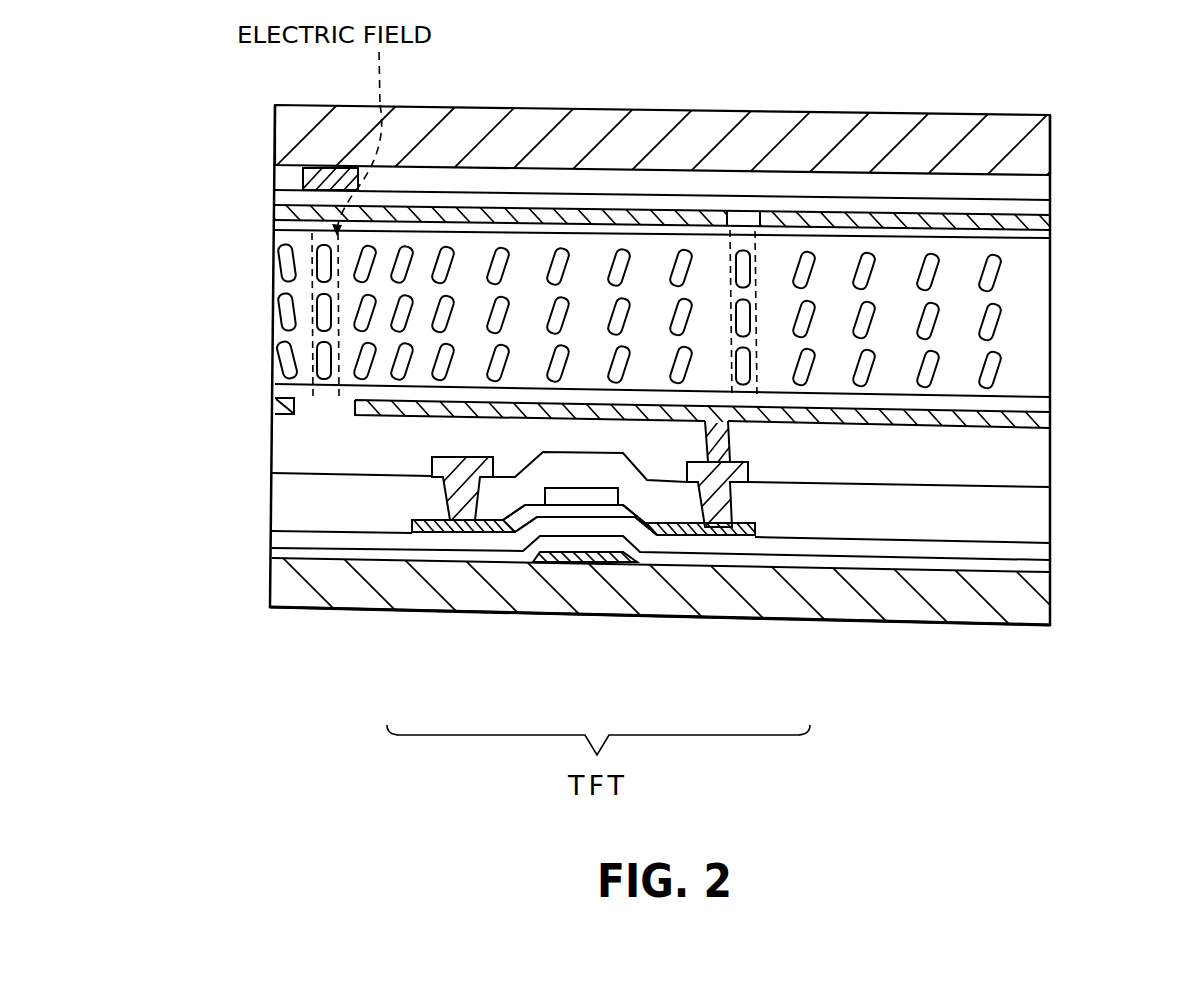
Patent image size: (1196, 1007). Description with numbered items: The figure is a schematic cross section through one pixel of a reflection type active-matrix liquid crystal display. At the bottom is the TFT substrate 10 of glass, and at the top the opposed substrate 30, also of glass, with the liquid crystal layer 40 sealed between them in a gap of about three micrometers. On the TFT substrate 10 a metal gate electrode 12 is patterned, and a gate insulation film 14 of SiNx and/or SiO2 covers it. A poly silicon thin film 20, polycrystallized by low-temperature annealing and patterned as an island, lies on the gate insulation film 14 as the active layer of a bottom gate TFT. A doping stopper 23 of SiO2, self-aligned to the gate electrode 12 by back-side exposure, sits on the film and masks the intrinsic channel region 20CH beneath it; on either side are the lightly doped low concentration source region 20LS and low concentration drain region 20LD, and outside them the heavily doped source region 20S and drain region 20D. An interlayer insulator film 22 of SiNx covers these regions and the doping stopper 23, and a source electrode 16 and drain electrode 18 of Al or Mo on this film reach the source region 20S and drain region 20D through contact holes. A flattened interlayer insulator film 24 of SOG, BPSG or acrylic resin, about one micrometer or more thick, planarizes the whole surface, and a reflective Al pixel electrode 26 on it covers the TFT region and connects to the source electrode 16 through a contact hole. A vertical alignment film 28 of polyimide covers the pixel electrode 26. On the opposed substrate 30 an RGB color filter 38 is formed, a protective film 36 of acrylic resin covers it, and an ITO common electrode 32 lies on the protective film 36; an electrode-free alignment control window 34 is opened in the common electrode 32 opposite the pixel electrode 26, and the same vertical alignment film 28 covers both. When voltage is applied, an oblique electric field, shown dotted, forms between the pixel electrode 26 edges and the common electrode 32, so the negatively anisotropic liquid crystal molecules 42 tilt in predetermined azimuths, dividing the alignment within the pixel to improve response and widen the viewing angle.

The TFT substrate 10 is at (300, 602).
The gate electrode 12 is at (597, 498).
The gate insulation film 14 is at (1055, 545).
The source electrode 16 is at (748, 470).
The drain electrode 18 is at (436, 460).
The poly silicon thin film 20 is at (609, 611).
The drain region 20D is at (432, 527).
The low concentration drain region 20LD is at (512, 527).
The channel region 20CH is at (550, 508).
The low concentration source region 20LS is at (657, 523).
The source region 20S is at (718, 540).
The interlayer insulator film 22 is at (1048, 512).
The doping stopper 23 is at (578, 563).
The flattened interlayer insulator film 24 is at (1048, 462).
The pixel electrode 26 is at (1050, 417).
The vertical alignment film 28 is at (1053, 235).
The opposed substrate 30 is at (1055, 166).
The common electrode 32 is at (1053, 225).
The alignment control window 34 is at (745, 212).
The protective film 36 is at (1053, 208).
The RGB color filter 38 is at (944, 188).
The liquid crystal layer 40 is at (262, 230).
The liquid crystal molecule 42 is at (360, 362).